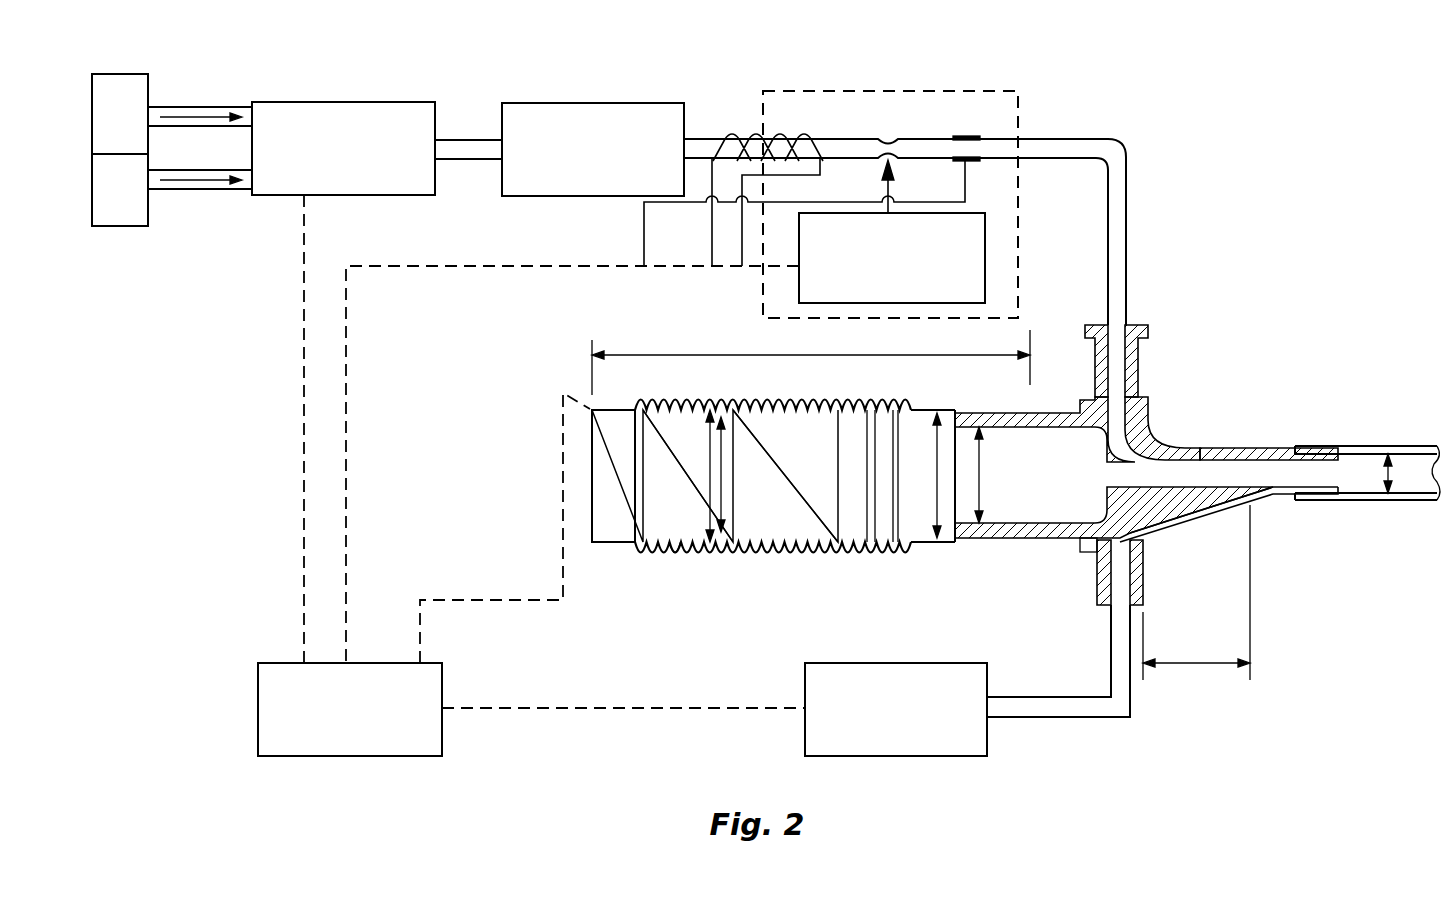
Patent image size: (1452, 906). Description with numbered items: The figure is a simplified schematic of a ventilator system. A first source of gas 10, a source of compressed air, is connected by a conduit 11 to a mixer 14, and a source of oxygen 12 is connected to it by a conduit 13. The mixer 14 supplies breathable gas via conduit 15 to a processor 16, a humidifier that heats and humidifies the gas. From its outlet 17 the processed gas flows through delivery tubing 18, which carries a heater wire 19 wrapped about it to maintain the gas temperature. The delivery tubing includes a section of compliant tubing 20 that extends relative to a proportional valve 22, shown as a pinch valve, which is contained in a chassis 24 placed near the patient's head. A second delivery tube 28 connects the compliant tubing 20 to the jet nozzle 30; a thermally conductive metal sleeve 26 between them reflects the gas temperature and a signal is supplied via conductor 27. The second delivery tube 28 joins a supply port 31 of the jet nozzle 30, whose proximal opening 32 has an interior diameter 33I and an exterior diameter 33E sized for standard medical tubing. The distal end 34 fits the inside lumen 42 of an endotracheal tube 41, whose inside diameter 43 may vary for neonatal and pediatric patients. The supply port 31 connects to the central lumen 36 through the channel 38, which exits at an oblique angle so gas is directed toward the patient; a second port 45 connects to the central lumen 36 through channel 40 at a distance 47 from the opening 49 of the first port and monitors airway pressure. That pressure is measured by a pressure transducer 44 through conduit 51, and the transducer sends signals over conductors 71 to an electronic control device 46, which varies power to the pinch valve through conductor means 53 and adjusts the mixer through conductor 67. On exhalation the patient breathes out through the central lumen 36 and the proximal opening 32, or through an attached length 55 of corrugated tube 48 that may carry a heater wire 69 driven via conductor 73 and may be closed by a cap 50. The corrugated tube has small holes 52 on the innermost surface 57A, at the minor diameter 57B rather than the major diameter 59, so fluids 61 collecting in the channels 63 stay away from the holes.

The first source of gas 10 is at (120, 226).
The conduit 11 is at (193, 190).
The source of oxygen 12 is at (130, 73).
The conduit 13 is at (205, 107).
The mixer 14 is at (343, 148).
The conduit 15 is at (460, 140).
The processor 16 is at (593, 149).
The outlet 17 is at (702, 139).
The delivery tubing 18 is at (740, 139).
The heater wire 19 is at (712, 240).
The compliant tubing 20 is at (835, 139).
The proportional valve 22 is at (892, 258).
The chassis 24 is at (890, 190).
The metal sleeve 26 is at (965, 138).
The conductor 27 is at (810, 202).
The second delivery tube 28 is at (1120, 150).
The jet nozzle 30 is at (1283, 447).
The supply port 31 is at (1140, 360).
The proximal opening 32 is at (1017, 457).
The exterior diameter 33E is at (937, 440).
The interior diameter 33I is at (990, 495).
The distal end 34 is at (1313, 470).
The central lumen 36 is at (1128, 474).
The channel 38 is at (1150, 430).
The channel 40 is at (1170, 525).
The endotracheal tube 41 is at (1360, 446).
The inside lumen 42 is at (1408, 475).
The inside diameter 43 is at (1390, 462).
The pressure transducer 44 is at (896, 709).
The second port 45 is at (1145, 583).
The electronic control device 46 is at (350, 709).
The distance 47 is at (1197, 665).
The corrugated tube 48 is at (800, 555).
The opening 49 is at (1165, 455).
The cap 50 is at (592, 510).
The conduit 51 is at (1058, 717).
The small holes 52 is at (771, 413).
The conductor means 53 is at (405, 267).
The length 55 is at (670, 355).
The innermost surface 57A is at (812, 410).
The minor diameter 57B is at (733, 457).
The major diameter 59 is at (705, 450).
The fluids 61 is at (770, 542).
The channels 63 is at (683, 555).
The conductor 67 is at (303, 445).
The heater wire 69 is at (615, 477).
The conductors 71 is at (505, 708).
The conductor 73 is at (480, 600).